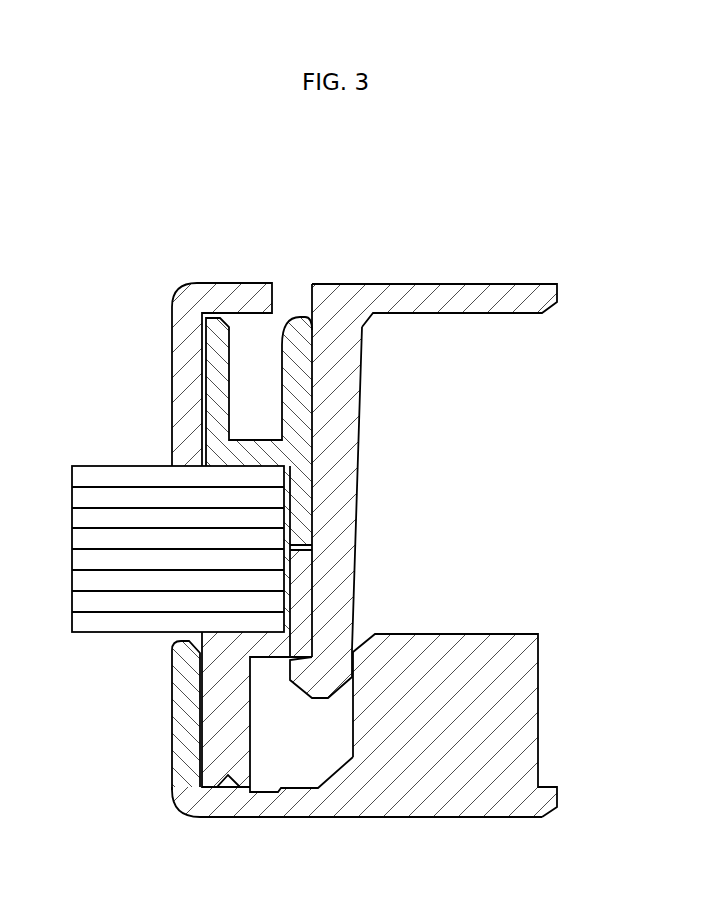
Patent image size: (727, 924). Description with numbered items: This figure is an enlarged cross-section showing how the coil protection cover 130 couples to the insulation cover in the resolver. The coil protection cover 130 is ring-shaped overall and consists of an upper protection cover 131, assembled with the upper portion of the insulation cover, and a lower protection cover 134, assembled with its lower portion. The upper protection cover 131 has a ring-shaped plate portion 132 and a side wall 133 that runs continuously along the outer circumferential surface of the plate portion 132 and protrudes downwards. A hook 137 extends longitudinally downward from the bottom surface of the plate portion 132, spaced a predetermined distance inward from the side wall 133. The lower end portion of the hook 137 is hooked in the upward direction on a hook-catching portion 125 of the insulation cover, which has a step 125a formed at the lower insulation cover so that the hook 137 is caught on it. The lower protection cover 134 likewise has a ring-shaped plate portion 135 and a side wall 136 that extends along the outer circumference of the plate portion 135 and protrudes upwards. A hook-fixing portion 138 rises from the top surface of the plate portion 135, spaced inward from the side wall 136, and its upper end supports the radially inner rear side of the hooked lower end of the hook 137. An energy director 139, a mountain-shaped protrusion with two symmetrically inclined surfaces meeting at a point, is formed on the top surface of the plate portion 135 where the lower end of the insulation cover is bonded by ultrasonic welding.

The coil protection cover 130 is at (365, 685).
The upper protection cover 131 is at (218, 281).
The plate portion 132 is at (513, 303).
The side wall 133 is at (172, 381).
The lower protection cover 134 is at (383, 818).
The plate portion 135 is at (218, 818).
The side wall 136 is at (172, 712).
The hook 137 is at (357, 483).
The hook-fixing portion 138 is at (518, 633).
The energy director 139 is at (225, 777).
The hook-catching portion 125 is at (196, 483).
The step 125a is at (305, 673).